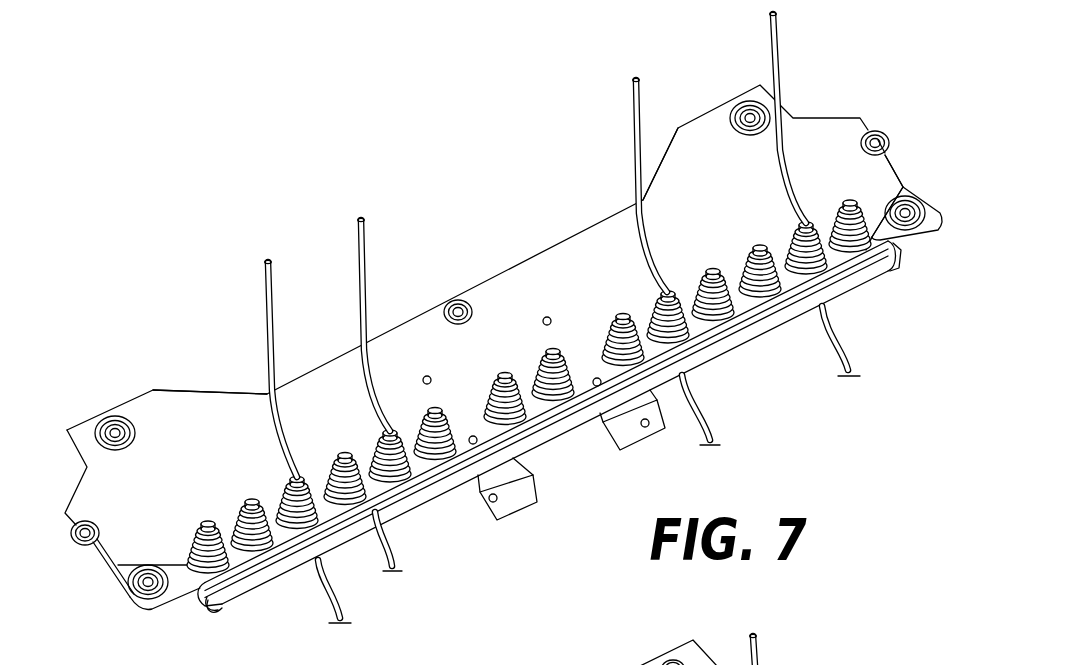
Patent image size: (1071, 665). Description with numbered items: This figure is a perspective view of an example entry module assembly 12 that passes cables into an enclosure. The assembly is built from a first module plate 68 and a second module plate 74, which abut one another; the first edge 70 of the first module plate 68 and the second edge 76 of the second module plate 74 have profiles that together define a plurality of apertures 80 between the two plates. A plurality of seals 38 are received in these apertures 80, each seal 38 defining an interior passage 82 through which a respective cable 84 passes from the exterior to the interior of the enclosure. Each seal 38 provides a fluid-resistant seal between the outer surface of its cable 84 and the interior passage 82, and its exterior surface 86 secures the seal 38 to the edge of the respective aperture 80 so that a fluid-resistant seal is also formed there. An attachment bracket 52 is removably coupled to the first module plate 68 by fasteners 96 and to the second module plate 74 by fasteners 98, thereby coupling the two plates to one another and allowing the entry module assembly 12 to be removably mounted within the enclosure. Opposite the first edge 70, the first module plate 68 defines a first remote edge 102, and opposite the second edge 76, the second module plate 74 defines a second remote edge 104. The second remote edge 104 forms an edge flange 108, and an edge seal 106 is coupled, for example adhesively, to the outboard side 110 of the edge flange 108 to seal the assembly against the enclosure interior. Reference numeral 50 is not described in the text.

The entry module assembly 12 is at (355, 131).
The seal 38 is at (292, 480).
The fastener 50 is at (117, 416).
The attachment bracket 52 is at (527, 487).
The first module plate 68 is at (166, 435).
The first edge 70 is at (118, 565).
The second module plate 74 is at (173, 588).
The second edge 76 is at (120, 588).
The aperture 80 is at (212, 584).
The interior passage 82 is at (207, 520).
The cable 84 is at (276, 284).
The exterior surface 86 is at (500, 373).
The fastener 96 is at (423, 379).
The fastener 98 is at (473, 445).
The first remote edge 102 is at (205, 394).
The second remote edge 104 is at (205, 594).
The edge seal 106 is at (290, 566).
The edge flange 108 is at (393, 553).
The outboard side 110 is at (301, 574).